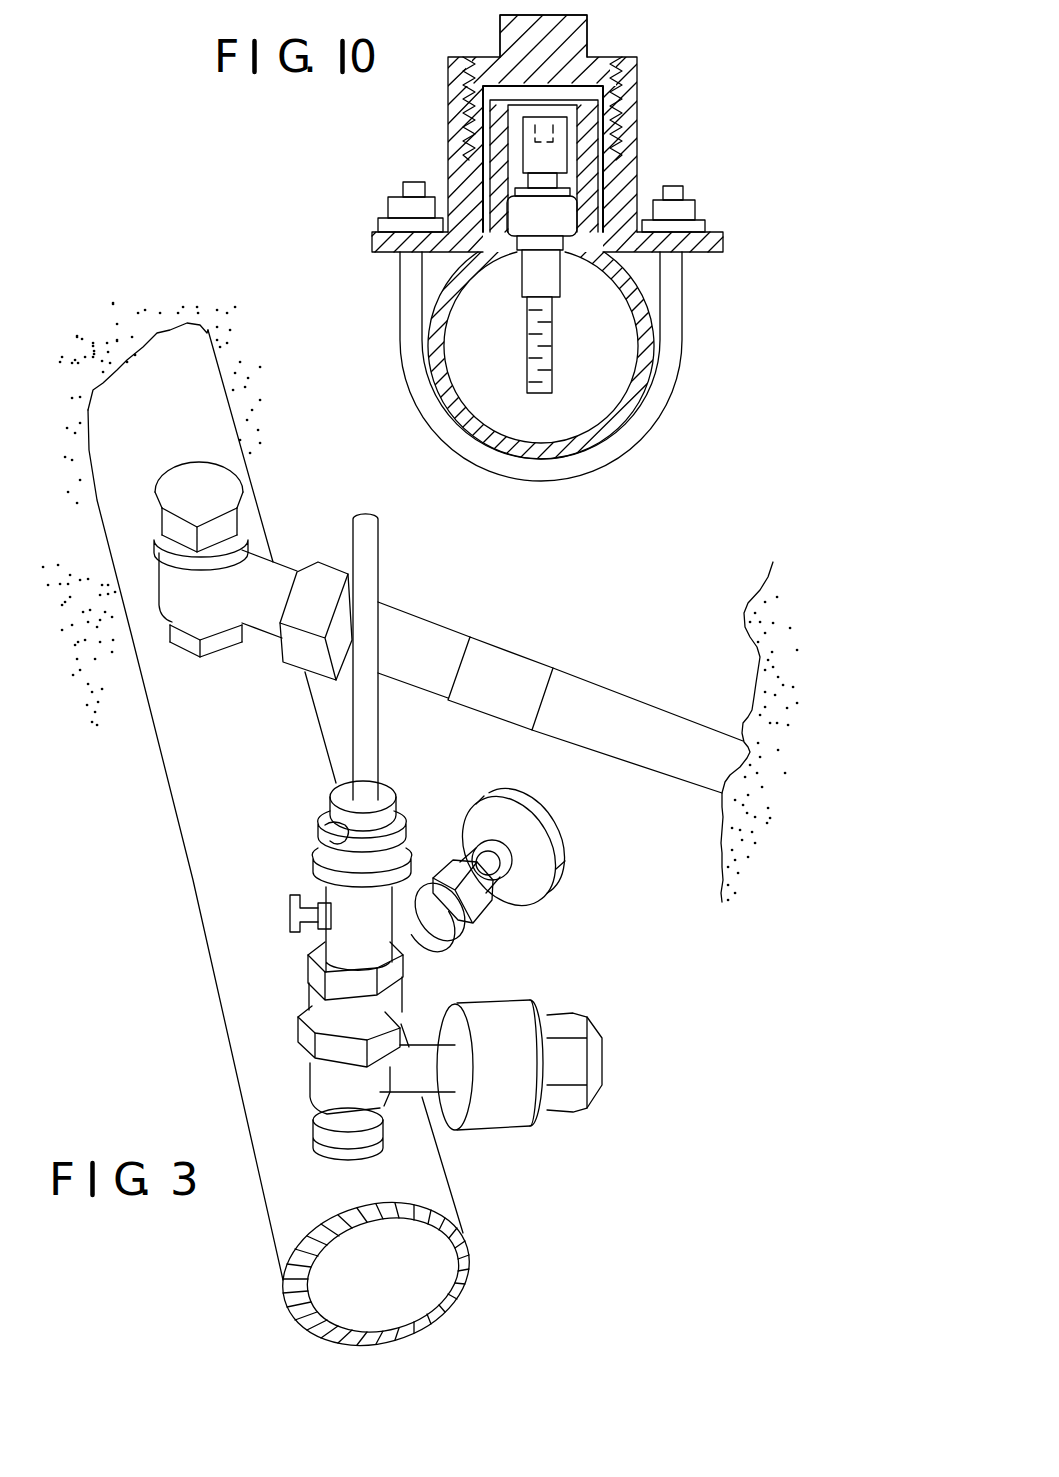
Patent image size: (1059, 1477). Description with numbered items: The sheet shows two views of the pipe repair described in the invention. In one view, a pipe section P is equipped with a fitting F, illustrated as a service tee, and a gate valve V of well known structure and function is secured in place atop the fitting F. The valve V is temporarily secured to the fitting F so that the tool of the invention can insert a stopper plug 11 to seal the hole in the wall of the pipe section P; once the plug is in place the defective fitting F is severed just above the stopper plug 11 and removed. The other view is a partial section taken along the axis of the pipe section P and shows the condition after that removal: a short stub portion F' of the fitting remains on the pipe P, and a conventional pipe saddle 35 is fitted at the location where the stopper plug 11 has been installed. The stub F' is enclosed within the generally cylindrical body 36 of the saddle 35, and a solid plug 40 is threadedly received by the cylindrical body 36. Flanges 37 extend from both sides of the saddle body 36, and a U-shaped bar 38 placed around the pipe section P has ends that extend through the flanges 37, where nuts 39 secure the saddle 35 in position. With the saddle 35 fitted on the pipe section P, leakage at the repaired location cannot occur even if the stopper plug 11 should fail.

In FIG. 10, the pipe saddle 35 is at (672, 134).
In FIG. 10, the cylindrical body 36 is at (477, 160).
In FIG. 10, the flanges 37 is at (372, 236).
In FIG. 10, the U-shaped bar 38 is at (682, 366).
In FIG. 10, the nuts 39 is at (390, 200).
In FIG. 10, the solid plug 40 is at (588, 42).
In FIG. 10, the stopper plug 11 is at (560, 213).
In FIG. 10, the stub portion F' is at (584, 153).
In FIG. 10, the pipe section P is at (443, 353).
In FIG. 3, the pipe section P is at (185, 919).
In FIG. 3, the gate valve V is at (298, 968).
In FIG. 3, the fitting F is at (491, 1031).